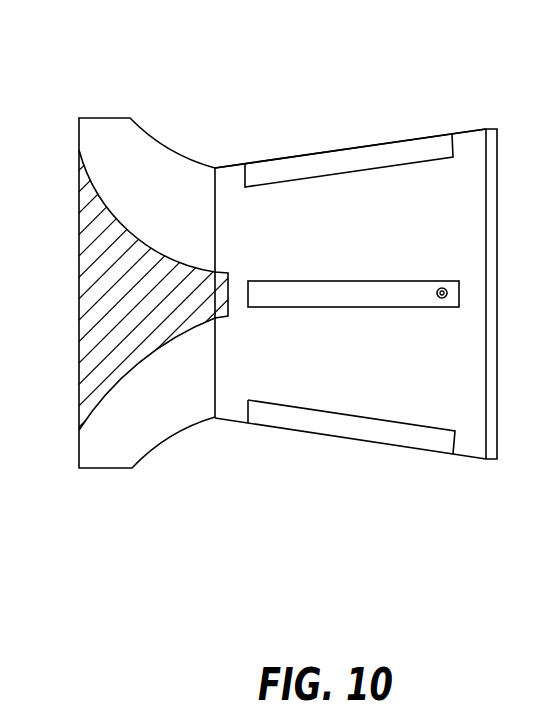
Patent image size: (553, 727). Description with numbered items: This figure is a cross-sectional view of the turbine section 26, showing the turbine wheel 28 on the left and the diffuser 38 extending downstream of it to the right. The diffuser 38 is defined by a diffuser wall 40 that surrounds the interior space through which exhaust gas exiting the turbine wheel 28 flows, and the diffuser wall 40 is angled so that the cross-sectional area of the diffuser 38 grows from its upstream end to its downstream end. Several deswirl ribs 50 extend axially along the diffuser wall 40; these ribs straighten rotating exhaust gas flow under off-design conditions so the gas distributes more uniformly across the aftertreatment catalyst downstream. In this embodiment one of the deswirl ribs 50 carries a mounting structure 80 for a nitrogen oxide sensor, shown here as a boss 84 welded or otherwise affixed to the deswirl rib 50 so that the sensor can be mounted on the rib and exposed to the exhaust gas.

The turbine section 26 is at (211, 66).
The turbine wheel 28 is at (125, 228).
The diffuser 38 is at (352, 102).
The diffuser wall 40 is at (438, 134).
The deswirl ribs 50 is at (317, 168).
The mounting structure 80 is at (444, 288).
The boss 84 is at (443, 298).